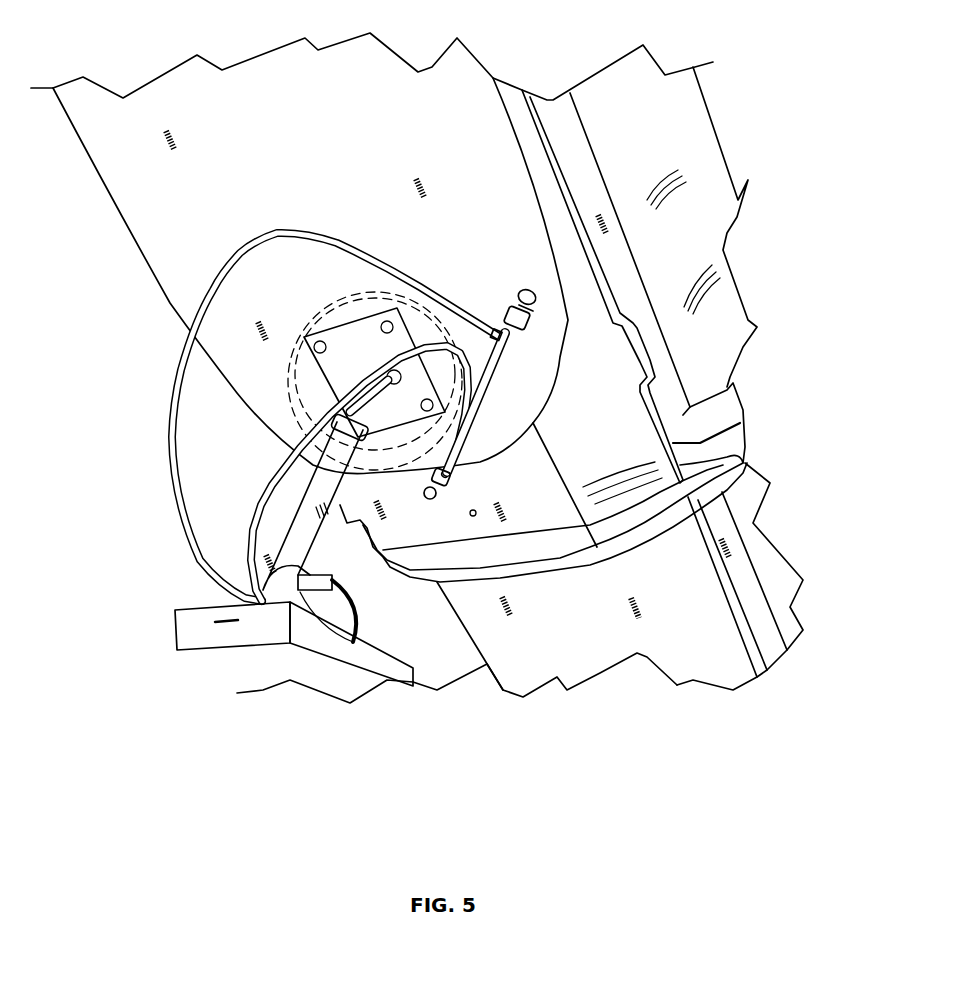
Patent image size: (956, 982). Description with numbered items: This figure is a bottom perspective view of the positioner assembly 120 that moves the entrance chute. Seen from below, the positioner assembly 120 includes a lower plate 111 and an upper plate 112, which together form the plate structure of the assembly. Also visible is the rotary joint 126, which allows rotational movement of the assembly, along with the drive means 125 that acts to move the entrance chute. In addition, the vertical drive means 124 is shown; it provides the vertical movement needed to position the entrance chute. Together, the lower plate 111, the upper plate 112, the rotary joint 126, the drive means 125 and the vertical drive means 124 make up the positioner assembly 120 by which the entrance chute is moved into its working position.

The lower plate 111 is at (507, 207).
The upper plate 112 is at (520, 463).
The positioner assembly 120 is at (543, 310).
The vertical drive means 124 is at (303, 540).
The drive means 125 is at (480, 418).
The rotary joint 126 is at (298, 380).